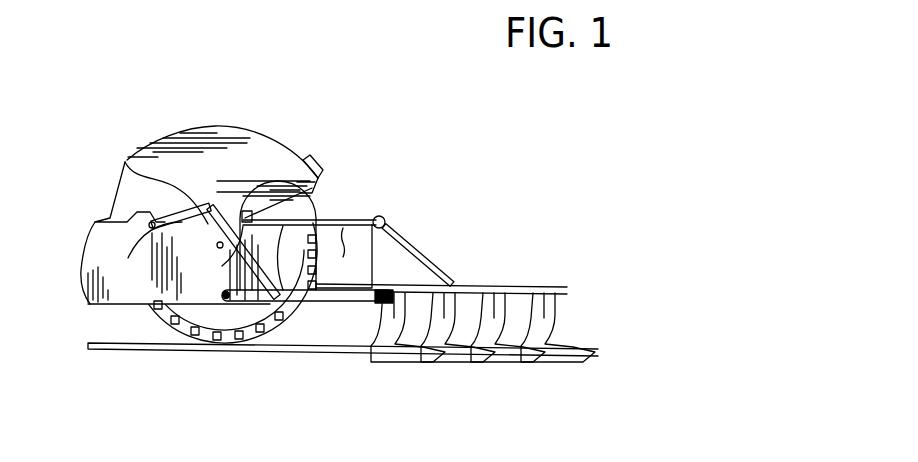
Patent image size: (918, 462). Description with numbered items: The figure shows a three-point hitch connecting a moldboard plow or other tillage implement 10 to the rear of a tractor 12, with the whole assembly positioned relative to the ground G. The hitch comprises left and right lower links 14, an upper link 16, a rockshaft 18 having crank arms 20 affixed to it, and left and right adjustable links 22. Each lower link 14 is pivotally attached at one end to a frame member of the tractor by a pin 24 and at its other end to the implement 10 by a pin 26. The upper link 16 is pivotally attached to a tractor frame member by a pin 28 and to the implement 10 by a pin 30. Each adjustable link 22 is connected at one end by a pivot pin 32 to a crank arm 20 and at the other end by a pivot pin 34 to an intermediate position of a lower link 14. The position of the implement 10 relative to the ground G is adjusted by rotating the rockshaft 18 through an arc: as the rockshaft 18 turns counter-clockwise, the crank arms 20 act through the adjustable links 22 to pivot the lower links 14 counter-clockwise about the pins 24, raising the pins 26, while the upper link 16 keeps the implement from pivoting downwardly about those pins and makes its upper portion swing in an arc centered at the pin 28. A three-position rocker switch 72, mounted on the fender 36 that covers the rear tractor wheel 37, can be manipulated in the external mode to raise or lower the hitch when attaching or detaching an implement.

The tillage implement 10 is at (462, 240).
The tractor 12 is at (90, 268).
The lower links 14 is at (311, 312).
The upper link 16 is at (344, 256).
The rockshaft 18 is at (145, 226).
The crank arms 20 is at (125, 162).
The adjustable links 22 is at (232, 268).
The pins 24 is at (197, 308).
The pins 26 is at (360, 345).
The pin 28 is at (243, 210).
The pin 30 is at (386, 221).
The pivot pin 32 is at (200, 208).
The pivot pin 34 is at (246, 340).
The fenders 36 is at (243, 130).
The rear tractor wheels 37 is at (293, 312).
The three-position rocker switch 72 is at (320, 164).
The ground G is at (108, 343).